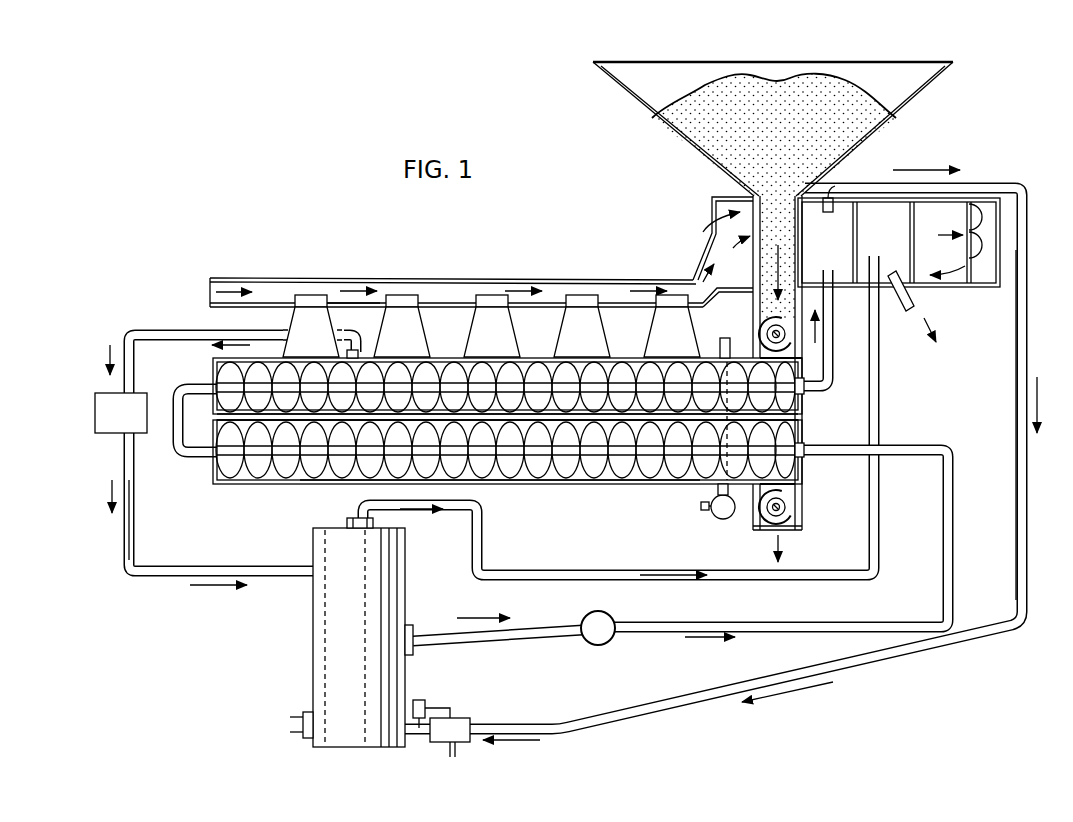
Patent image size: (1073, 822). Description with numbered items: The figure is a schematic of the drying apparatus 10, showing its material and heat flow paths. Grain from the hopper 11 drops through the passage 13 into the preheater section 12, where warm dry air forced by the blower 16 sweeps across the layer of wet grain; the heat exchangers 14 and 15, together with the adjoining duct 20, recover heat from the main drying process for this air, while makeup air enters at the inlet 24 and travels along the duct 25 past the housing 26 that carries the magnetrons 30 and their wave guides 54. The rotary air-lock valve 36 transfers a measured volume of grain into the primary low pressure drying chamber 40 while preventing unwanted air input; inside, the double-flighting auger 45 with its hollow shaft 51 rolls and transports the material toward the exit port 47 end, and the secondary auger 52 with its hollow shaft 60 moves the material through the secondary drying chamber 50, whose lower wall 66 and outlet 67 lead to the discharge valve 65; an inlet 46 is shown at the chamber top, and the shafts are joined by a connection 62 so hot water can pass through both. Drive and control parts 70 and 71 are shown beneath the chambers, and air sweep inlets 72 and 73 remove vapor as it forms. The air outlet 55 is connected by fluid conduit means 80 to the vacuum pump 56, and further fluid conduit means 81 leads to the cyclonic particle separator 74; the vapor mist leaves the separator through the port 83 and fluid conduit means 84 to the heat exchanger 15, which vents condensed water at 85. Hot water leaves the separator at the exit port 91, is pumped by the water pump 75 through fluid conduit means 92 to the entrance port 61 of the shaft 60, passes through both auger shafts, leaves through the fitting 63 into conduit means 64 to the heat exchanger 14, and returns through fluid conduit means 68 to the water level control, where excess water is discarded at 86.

The apparatus 10 is at (292, 211).
The hopper 11 is at (862, 52).
The preheater section 12 is at (706, 203).
The feed chute 13 is at (786, 240).
The heat exchanger 14 is at (834, 195).
The heat exchanger 15 is at (880, 210).
The blower 16 is at (951, 214).
The conduit 20 is at (991, 200).
The air inlet 24 is at (210, 293).
The duct 25 is at (278, 283).
The housing 26 is at (330, 284).
The magnetrons 30 is at (491, 292).
The rotary air-lock valve 36 is at (762, 327).
The primary chamber 40 is at (213, 364).
The double-flighting auger 45 is at (782, 402).
The inlet opening 46 is at (787, 358).
The exit port 47 is at (214, 412).
The drying chamber 50 is at (213, 481).
The shaft 51 is at (543, 366).
The secondary auger 52 is at (287, 470).
The wave guides 54 is at (418, 338).
The air outlet 55 is at (358, 349).
The vacuum pump 56 is at (100, 397).
The hollow shaft 60 is at (772, 452).
The entrance port 61 is at (804, 457).
The connecting pipe 62 is at (176, 438).
The fitting 63 is at (806, 388).
The conduit means 64 is at (835, 317).
The rotary discharge valve 65 is at (796, 511).
The bottom wall 66 is at (586, 486).
The outlet 67 is at (787, 482).
The fluid conduit means 68 is at (1028, 221).
The motor 70 is at (720, 517).
The switch 71 is at (702, 508).
The inlet 72 is at (716, 487).
The inlet 73 is at (720, 346).
The cyclonic particle separator 74 is at (312, 631).
The water pump 75 is at (609, 617).
The fluid conduit means 80 is at (127, 331).
The fluid conduit means 81 is at (124, 547).
The port 83 is at (348, 520).
The fluid conduit means 84 is at (483, 524).
The vent 85 is at (913, 300).
The vent 86 is at (449, 745).
The exit port 91 is at (416, 622).
The fluid conduit means 92 is at (540, 630).